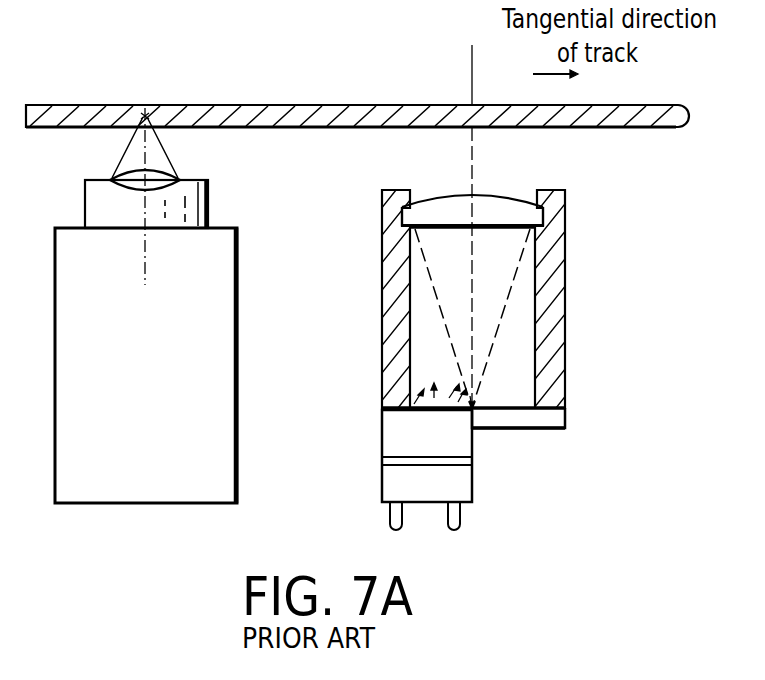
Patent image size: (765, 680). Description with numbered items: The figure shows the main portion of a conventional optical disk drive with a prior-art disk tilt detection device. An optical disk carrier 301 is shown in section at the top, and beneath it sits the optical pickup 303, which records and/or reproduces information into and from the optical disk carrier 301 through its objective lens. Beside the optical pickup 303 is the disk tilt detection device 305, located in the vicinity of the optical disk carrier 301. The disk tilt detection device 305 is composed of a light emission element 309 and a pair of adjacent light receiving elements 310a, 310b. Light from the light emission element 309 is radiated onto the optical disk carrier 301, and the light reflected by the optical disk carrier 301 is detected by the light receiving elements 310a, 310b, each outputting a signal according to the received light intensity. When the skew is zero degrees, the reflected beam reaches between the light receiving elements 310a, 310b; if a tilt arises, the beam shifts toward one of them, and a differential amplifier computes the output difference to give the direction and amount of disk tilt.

The optical disk carrier 301 is at (637, 128).
The optical pickup 303 is at (237, 462).
The disk tilt detection device 305 is at (643, 237).
The light emission element 309 is at (381, 432).
The light receiving element 310a is at (548, 449).
The light receiving element 310b is at (523, 418).